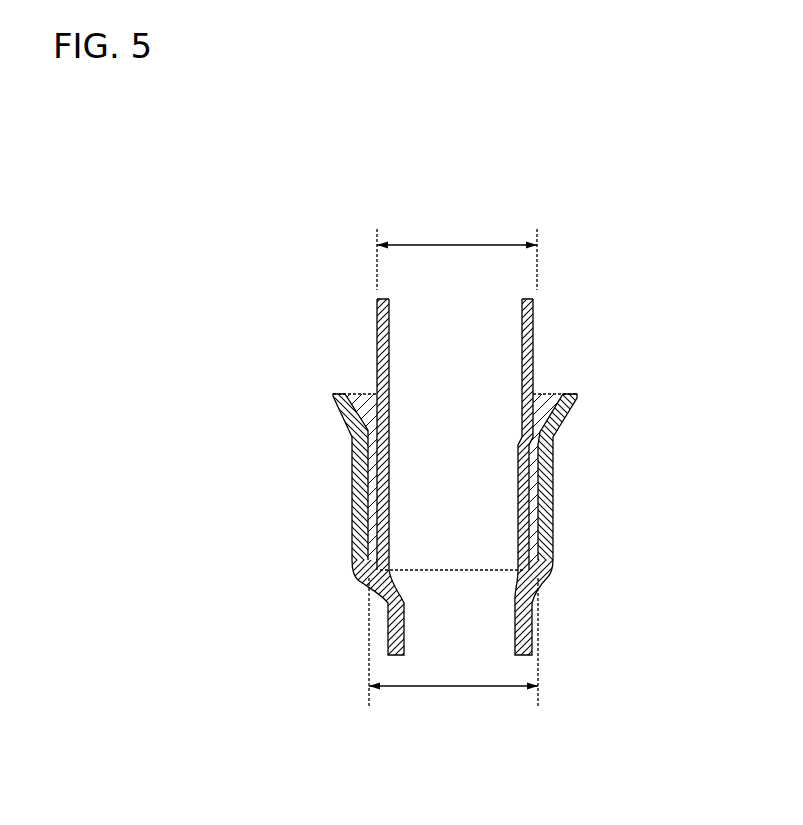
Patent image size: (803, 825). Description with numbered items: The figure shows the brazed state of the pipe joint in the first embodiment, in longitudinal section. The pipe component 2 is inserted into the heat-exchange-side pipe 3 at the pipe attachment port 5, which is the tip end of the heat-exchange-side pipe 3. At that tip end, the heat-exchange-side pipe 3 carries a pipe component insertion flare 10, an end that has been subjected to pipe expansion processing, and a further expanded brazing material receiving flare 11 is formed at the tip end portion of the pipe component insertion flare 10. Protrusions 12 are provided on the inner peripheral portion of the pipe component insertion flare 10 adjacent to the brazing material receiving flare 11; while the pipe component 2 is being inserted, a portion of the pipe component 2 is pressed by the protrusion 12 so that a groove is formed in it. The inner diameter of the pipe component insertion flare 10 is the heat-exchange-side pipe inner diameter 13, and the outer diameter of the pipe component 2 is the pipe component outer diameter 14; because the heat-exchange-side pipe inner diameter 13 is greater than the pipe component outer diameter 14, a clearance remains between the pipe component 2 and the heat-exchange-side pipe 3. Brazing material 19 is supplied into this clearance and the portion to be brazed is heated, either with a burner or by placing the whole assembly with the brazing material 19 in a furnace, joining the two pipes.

The pipe component 2 is at (534, 316).
The heat-exchange-side pipe 3 is at (533, 613).
The pipe attachment port 5 is at (326, 487).
The pipe component insertion flare 10 is at (553, 506).
The brazing material receiving flare 11 is at (576, 406).
The protrusion 12 is at (544, 442).
The heat-exchange-side pipe inner diameter 13 is at (453, 687).
The pipe component outer diameter 14 is at (453, 246).
The brazing material 19 is at (374, 394).